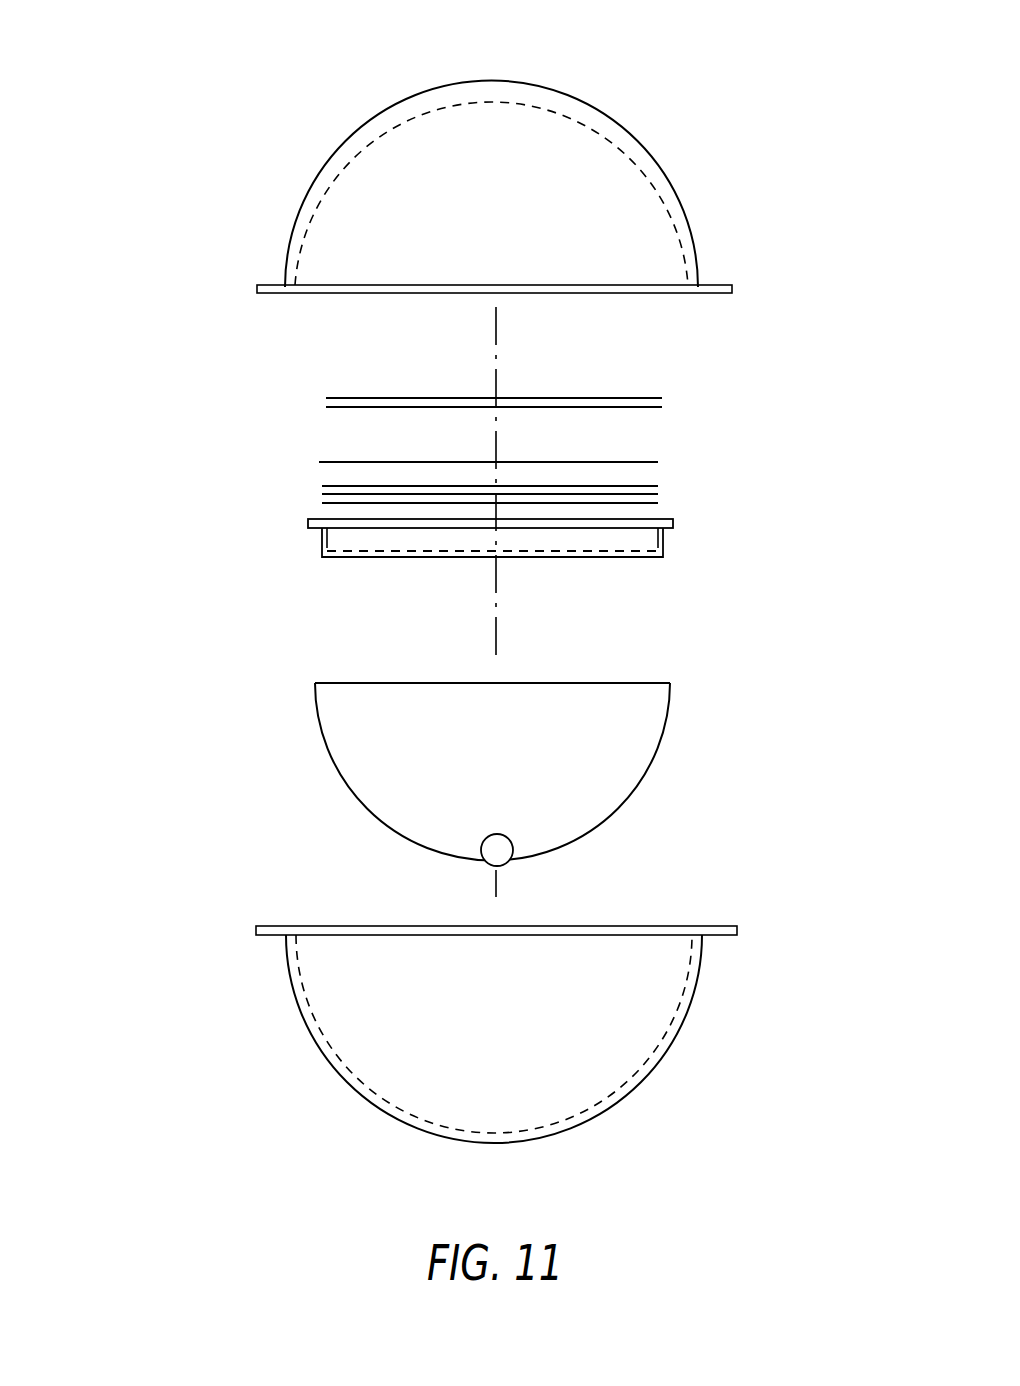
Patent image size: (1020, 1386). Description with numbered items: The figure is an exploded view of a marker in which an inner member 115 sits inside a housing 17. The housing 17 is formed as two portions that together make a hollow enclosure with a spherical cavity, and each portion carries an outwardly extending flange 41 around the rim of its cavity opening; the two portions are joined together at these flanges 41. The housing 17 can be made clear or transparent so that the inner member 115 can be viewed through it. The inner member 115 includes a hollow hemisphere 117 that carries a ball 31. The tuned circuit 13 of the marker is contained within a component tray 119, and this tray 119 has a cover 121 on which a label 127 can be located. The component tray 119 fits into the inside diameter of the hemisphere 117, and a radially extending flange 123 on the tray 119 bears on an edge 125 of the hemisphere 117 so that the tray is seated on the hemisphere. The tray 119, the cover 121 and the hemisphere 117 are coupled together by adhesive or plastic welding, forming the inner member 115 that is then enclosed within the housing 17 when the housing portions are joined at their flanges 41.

The housing 17 is at (473, 84).
The flange 41 is at (268, 285).
The cover 121 is at (630, 397).
The label 127 is at (625, 458).
The tuned circuit 13 is at (642, 483).
The radially extending flange 123 is at (653, 517).
The component tray 119 is at (642, 541).
The hollow hemisphere 117 is at (318, 723).
The edge 125 is at (670, 682).
The ball 31 is at (481, 860).
The inner member 115 is at (233, 636).